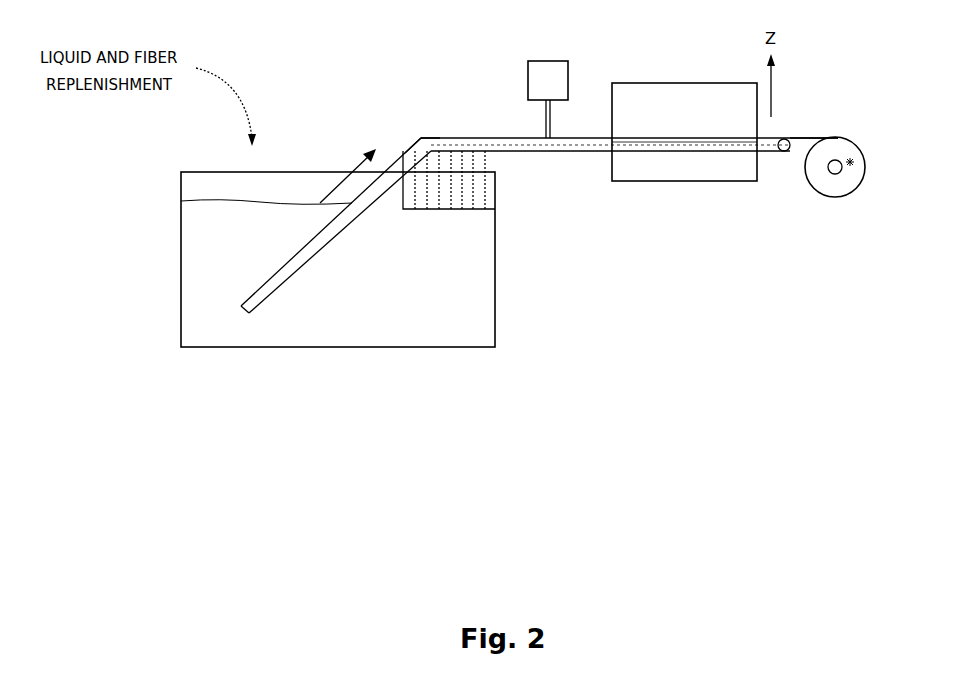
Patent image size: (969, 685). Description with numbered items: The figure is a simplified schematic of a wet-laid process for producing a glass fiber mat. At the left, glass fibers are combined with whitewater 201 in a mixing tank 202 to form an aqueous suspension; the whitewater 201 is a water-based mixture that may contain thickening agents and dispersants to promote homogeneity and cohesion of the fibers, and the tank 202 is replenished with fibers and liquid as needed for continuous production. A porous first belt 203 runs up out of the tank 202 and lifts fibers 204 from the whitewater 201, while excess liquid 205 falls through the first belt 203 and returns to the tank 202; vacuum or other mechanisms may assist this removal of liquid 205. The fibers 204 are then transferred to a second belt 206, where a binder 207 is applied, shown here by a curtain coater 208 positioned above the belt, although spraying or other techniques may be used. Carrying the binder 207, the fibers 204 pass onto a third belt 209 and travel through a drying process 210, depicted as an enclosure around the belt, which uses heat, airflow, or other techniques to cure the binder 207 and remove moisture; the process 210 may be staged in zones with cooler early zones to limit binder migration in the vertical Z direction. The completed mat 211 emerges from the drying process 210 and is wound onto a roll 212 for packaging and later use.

The whitewater 201 is at (423, 326).
The mixing tank 202 is at (338, 298).
The porous first belt 203 is at (324, 225).
The fibers 204 is at (396, 120).
The excess liquid 205 is at (477, 205).
The second belt 206 is at (629, 175).
The binder 207 is at (507, 119).
The curtain coater 208 is at (511, 80).
The third belt 209 is at (684, 180).
The drying process 210 is at (684, 101).
The completed mat 211 is at (820, 98).
The roll 212 is at (816, 189).